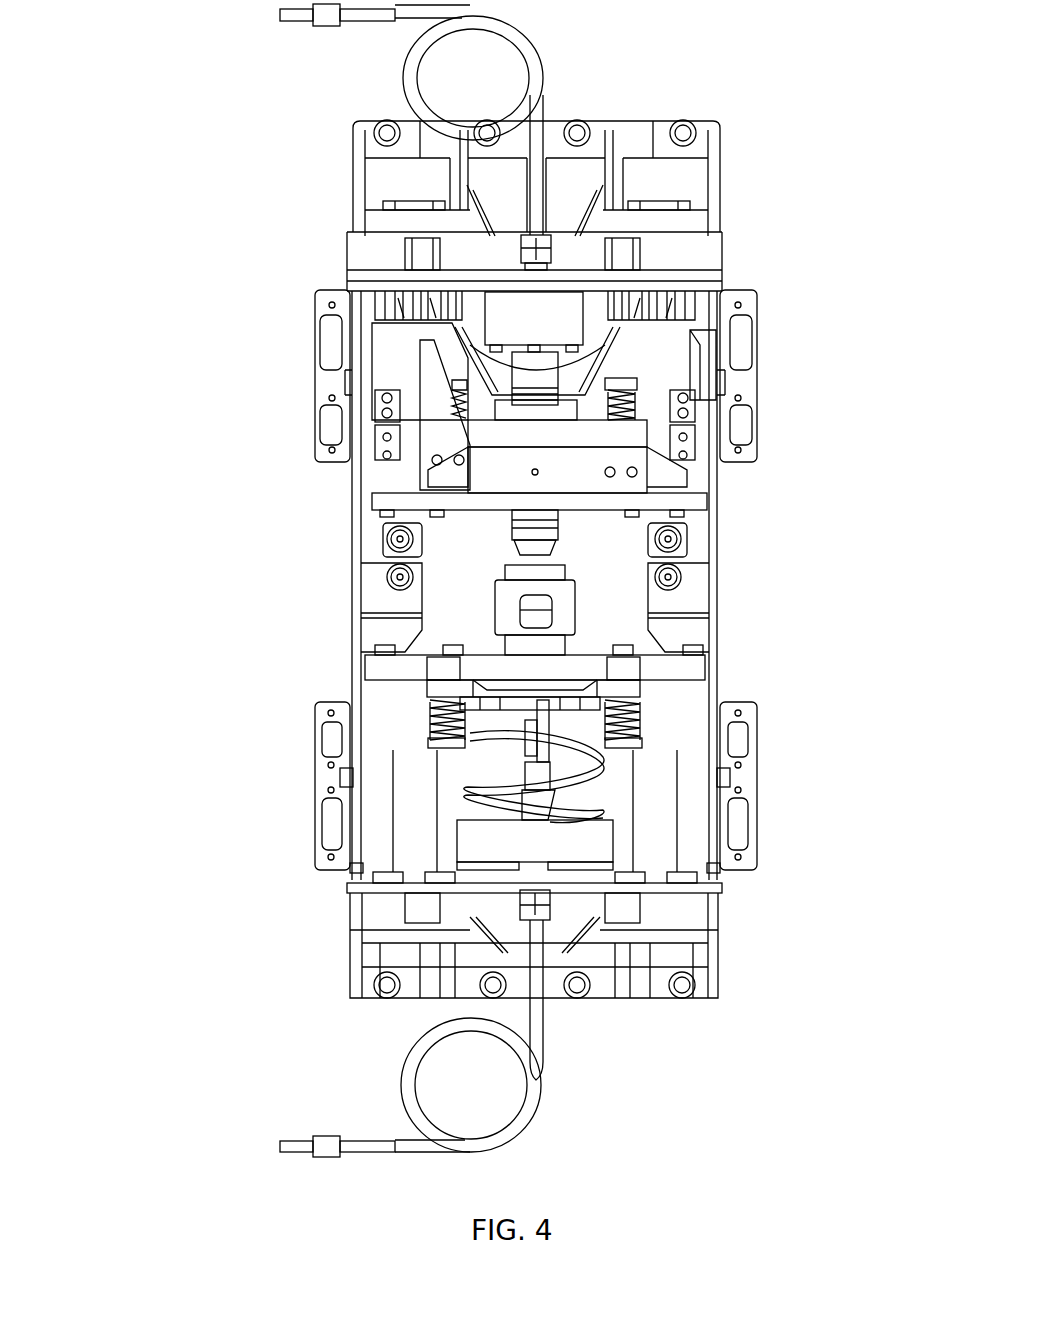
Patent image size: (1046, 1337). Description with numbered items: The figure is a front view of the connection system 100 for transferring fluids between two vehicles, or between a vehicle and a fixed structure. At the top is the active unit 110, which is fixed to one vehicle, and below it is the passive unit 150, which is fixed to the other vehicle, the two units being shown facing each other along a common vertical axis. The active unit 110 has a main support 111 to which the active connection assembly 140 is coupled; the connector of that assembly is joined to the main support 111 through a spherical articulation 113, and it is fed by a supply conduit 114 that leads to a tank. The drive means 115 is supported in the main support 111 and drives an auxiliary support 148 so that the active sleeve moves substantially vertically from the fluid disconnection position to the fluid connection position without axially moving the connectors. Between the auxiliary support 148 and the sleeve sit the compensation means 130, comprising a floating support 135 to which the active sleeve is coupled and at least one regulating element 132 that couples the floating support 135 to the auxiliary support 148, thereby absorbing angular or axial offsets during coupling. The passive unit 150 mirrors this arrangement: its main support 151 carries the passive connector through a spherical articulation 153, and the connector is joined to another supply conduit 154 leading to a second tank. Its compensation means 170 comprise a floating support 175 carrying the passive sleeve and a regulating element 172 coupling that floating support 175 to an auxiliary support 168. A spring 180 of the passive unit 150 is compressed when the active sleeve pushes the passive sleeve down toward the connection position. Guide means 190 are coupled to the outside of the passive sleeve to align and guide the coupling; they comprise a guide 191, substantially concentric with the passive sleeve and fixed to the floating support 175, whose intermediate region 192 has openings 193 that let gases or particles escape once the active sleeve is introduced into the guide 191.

The connection system 100 is at (150, 485).
The active unit 110 is at (772, 385).
The main support 111 is at (578, 268).
The spherical articulation 113 is at (538, 312).
The supply conduit 114 is at (393, 12).
The drive means 115 is at (403, 337).
The compensation means 130 is at (635, 386).
The regulating element 132 is at (637, 410).
The floating support 135 is at (470, 428).
The active connection assembly 140 is at (525, 537).
The auxiliary support 148 is at (500, 473).
The passive unit 150 is at (737, 673).
The main support 151 is at (380, 920).
The spherical articulation 153 is at (502, 848).
The supply conduit 154 is at (537, 1067).
The auxiliary support 168 is at (640, 665).
The compensation means 170 is at (633, 740).
The regulating element 172 is at (635, 722).
The floating support 175 is at (630, 688).
The spring 180 is at (600, 817).
The guide means 190 is at (497, 610).
The guide 191 is at (520, 641).
The intermediate region 192 is at (500, 587).
The openings 193 is at (530, 616).